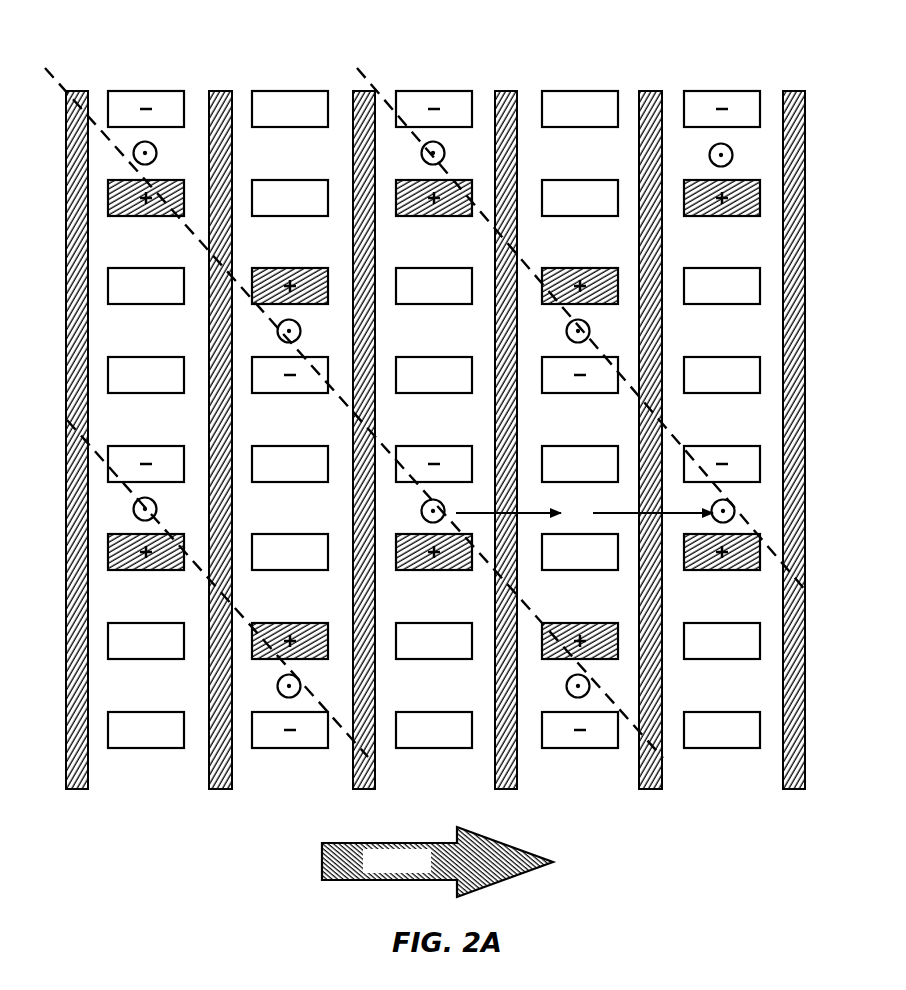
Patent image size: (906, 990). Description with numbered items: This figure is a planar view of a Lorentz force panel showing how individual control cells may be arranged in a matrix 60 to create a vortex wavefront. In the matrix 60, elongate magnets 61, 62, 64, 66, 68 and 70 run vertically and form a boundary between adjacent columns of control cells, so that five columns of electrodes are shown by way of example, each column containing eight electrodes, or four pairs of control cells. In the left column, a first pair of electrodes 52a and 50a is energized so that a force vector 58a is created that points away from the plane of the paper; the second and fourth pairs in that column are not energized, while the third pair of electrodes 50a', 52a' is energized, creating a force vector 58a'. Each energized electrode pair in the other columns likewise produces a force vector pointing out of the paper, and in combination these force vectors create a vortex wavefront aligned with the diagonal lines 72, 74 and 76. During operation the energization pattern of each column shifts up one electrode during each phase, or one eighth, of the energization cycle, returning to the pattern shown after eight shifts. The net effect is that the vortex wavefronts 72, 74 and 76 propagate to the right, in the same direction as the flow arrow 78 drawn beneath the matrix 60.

The matrix 60 is at (442, 60).
The elongate magnet 61 is at (79, 89).
The elongate magnet 62 is at (222, 89).
The elongate magnet 64 is at (366, 89).
The elongate magnet 66 is at (504, 89).
The elongate magnet 68 is at (654, 89).
The elongate magnet 70 is at (796, 89).
The vortex wavefront line 72 is at (378, 768).
The vortex wavefront line 74 is at (667, 762).
The vortex wavefront line 76 is at (807, 592).
The flow arrow 78 is at (327, 843).
The electrode 52a is at (154, 96).
The force vector 58a is at (82, 133).
The electrode 50a is at (96, 189).
The electrode 52a' is at (96, 453).
The force vector 58a' is at (82, 493).
The electrode 50a' is at (96, 545).